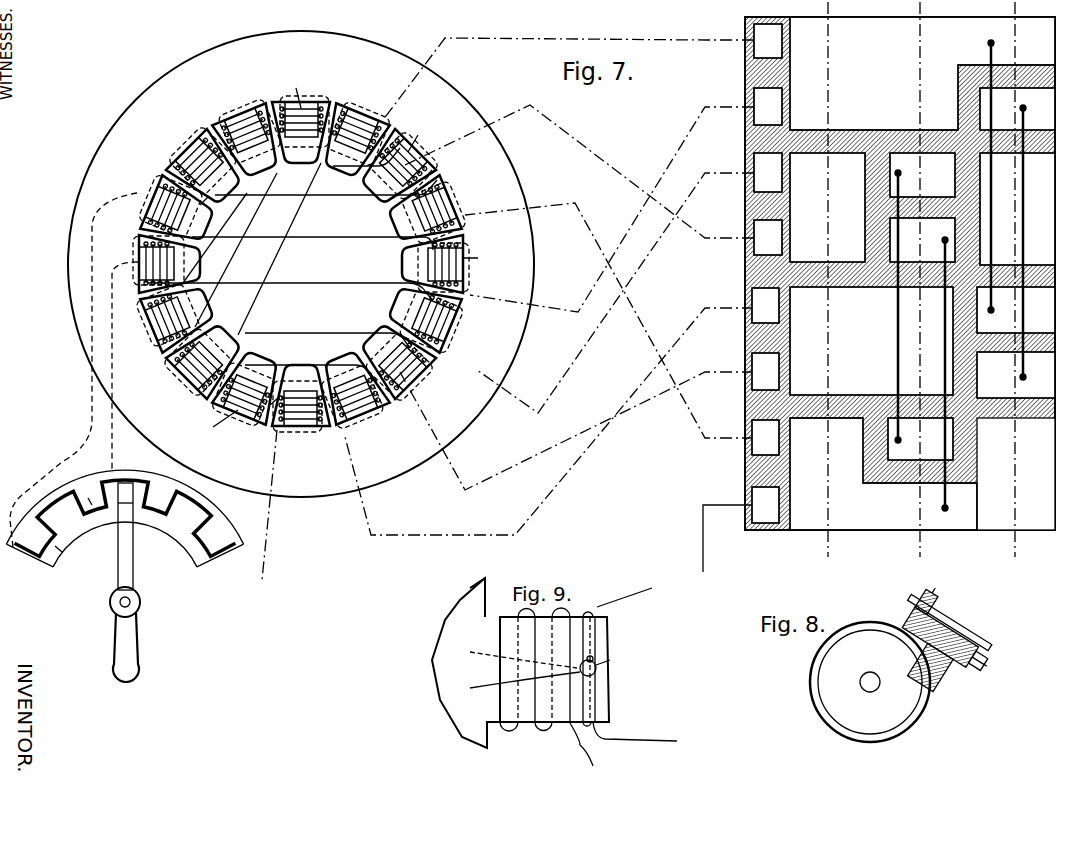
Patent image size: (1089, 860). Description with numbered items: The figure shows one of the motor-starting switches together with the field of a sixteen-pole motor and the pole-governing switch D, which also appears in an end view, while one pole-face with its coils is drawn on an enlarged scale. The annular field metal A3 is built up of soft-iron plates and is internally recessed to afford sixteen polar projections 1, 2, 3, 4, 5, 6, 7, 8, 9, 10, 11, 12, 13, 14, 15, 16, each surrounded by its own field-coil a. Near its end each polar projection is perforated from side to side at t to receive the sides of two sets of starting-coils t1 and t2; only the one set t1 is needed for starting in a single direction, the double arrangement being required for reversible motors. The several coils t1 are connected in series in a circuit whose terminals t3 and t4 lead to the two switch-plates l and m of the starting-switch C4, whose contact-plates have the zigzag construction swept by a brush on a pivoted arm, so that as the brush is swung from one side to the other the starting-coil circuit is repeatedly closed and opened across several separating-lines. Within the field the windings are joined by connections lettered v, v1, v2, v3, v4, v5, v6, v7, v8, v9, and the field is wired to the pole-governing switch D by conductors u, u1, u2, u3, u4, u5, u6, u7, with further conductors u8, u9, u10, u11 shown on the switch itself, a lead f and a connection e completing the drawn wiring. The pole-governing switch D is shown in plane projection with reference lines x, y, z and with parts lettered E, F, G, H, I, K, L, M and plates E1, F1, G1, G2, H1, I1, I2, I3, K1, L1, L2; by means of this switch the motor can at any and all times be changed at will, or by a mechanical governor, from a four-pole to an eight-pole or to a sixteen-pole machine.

In FIG. 7, the annular field metal A3 is at (301, 264).
In FIG. 9, the annular field metal A3 is at (506, 663).
In FIG. 7, the polar projection 1 is at (301, 397).
In FIG. 7, the polar projection 2 is at (249, 388).
In FIG. 7, the polar projection 3 is at (206, 359).
In FIG. 7, the polar projection 4 is at (177, 315).
In FIG. 7, the polar projection 5 is at (166, 264).
In FIG. 7, the polar projection 6 is at (177, 212).
In FIG. 7, the polar projection 7 is at (206, 169).
In FIG. 7, the polar projection 8 is at (249, 140).
In FIG. 7, the polar projection 9 is at (301, 129).
In FIG. 7, the polar projection 10 is at (352, 140).
In FIG. 7, the polar projection 11 is at (396, 169).
In FIG. 7, the polar projection 12 is at (425, 212).
In FIG. 7, the polar projection 13 is at (435, 264).
In FIG. 7, the polar projection 14 is at (425, 315).
In FIG. 7, the polar projection 15 is at (396, 359).
In FIG. 7, the polar projection 16 is at (352, 388).
In FIG. 7, the field-coil a is at (346, 254).
In FIG. 9, the field-coil a is at (554, 669).
In FIG. 9, the perforation t is at (599, 663).
In FIG. 7, the starting-coil t1 is at (350, 284).
In FIG. 9, the starting-coil t1 is at (618, 598).
In FIG. 9, the starting-coil t2 is at (623, 744).
In FIG. 7, the circuit terminal t3 is at (125, 367).
In FIG. 7, the circuit terminal t4 is at (73, 370).
In FIG. 7, the inner connecting wire v is at (279, 249).
In FIG. 7, the inner connecting wire v1 is at (311, 366).
In FIG. 7, the inner connecting wire v2 is at (236, 250).
In FIG. 7, the inner connecting wire v3 is at (366, 164).
In FIG. 7, the inner connecting wire v4 is at (327, 332).
In FIG. 7, the inner connecting wire v5 is at (215, 238).
In FIG. 7, the inner connecting wire v6 is at (326, 196).
In FIG. 7, the inner connecting wire v7 is at (289, 283).
In FIG. 7, the inner connecting wire v8 is at (208, 198).
In FIG. 7, the inner connecting wire v9 is at (312, 244).
In FIG. 7, the controller contact bar u is at (736, 206).
In FIG. 7, the controller lead wire u1 is at (581, 79).
In FIG. 7, the controller lead wire u2 is at (592, 173).
In FIG. 7, the controller lead wire u3 is at (622, 322).
In FIG. 7, the controller lead wire u4 is at (624, 209).
In FIG. 7, the controller lead wire u5 is at (628, 292).
In FIG. 7, the controller lead wire u6 is at (589, 430).
In FIG. 7, the controller lead wire u7 is at (562, 421).
In FIG. 7, the controller connecting wire u8 is at (938, 374).
In FIG. 7, the controller connecting wire u9 is at (890, 306).
In FIG. 7, the controller connecting wire u10 is at (1035, 242).
In FIG. 7, the controller connecting wire u11 is at (1000, 176).
In FIG. 7, the pole-governing switch D is at (910, 273).
In FIG. 8, the pole-governing switch D is at (870, 682).
In FIG. 7, the brush line x is at (820, 278).
In FIG. 7, the brush line y is at (912, 278).
In FIG. 7, the brush line z is at (1007, 278).
In FIG. 7, the contact E is at (765, 505).
In FIG. 7, the contact F is at (765, 438).
In FIG. 7, the contact G is at (765, 371).
In FIG. 7, the contact H is at (765, 306).
In FIG. 7, the contact I is at (768, 238).
In FIG. 7, the contact K is at (768, 172).
In FIG. 7, the contact L is at (768, 106).
In FIG. 7, the contact M is at (768, 41).
In FIG. 7, the contact plate E' E1 is at (883, 474).
In FIG. 7, the contact plate F' F1 is at (920, 439).
In FIG. 7, the contact plate G' G1 is at (871, 341).
In FIG. 7, the contact plate G2 is at (1016, 375).
In FIG. 7, the contact plate H' H1 is at (1016, 310).
In FIG. 7, the contact plate I' I1 is at (827, 207).
In FIG. 7, the contact plate I2 is at (922, 240).
In FIG. 7, the contact plate I3 is at (1017, 209).
In FIG. 7, the contact plate K' K1 is at (922, 175).
In FIG. 7, the contact plate L' L1 is at (922, 73).
In FIG. 7, the contact plate L2 is at (1017, 109).
In FIG. 7, the line wire f is at (741, 538).
In FIG. 7, the connecting wire e is at (269, 505).
In FIG. 7, the starting-switch C4 is at (124, 576).
In FIG. 7, the switch-plate l is at (88, 494).
In FIG. 7, the switch-plate m is at (67, 556).